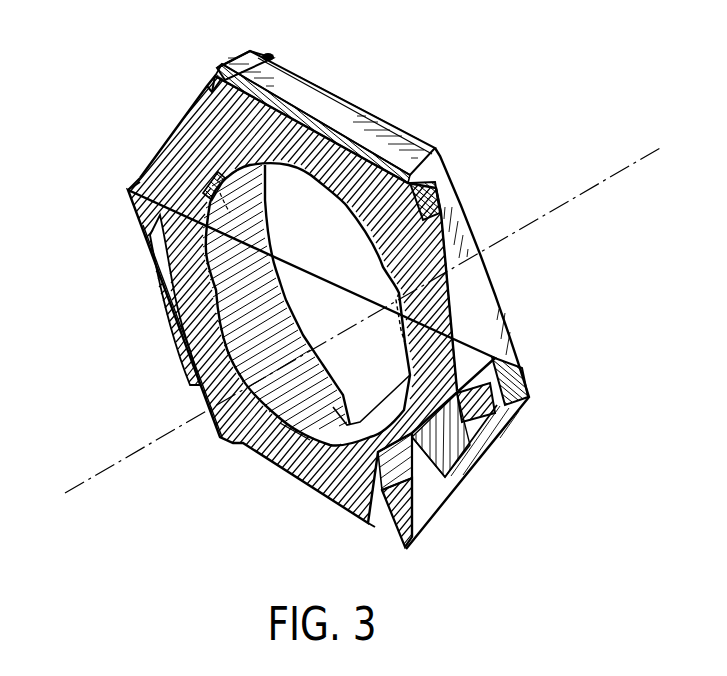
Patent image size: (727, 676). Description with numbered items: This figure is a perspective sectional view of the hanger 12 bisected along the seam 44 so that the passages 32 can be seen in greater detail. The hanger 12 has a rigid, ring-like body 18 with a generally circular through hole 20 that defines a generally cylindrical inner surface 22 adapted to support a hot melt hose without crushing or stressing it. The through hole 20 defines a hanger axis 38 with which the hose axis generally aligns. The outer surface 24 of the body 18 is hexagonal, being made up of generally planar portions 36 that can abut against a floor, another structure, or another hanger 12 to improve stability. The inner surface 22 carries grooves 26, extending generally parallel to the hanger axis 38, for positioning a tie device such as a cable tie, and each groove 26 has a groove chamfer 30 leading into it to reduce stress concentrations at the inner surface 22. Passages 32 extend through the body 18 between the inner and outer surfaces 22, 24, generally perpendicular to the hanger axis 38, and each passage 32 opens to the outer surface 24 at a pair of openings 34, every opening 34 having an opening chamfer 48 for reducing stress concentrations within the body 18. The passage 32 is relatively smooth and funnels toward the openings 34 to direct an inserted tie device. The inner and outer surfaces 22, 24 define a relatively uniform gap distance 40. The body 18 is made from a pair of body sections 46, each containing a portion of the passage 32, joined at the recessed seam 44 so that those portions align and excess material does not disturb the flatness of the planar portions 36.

The hanger 12 is at (562, 92).
The body 18 is at (165, 97).
The through hole 20 is at (268, 298).
The inner surface 22 is at (283, 328).
The outer surface 24 is at (396, 148).
The groove 26 is at (222, 186).
The groove chamfer 30 is at (347, 423).
The passage 32 is at (180, 290).
The opening 34 is at (212, 90).
The planar portion 36 is at (173, 127).
The hanger axis 38 is at (114, 466).
The gap distance 40 is at (138, 198).
The seam 44 is at (263, 97).
The body section 46 is at (245, 46).
The opening chamfer 48 is at (208, 88).